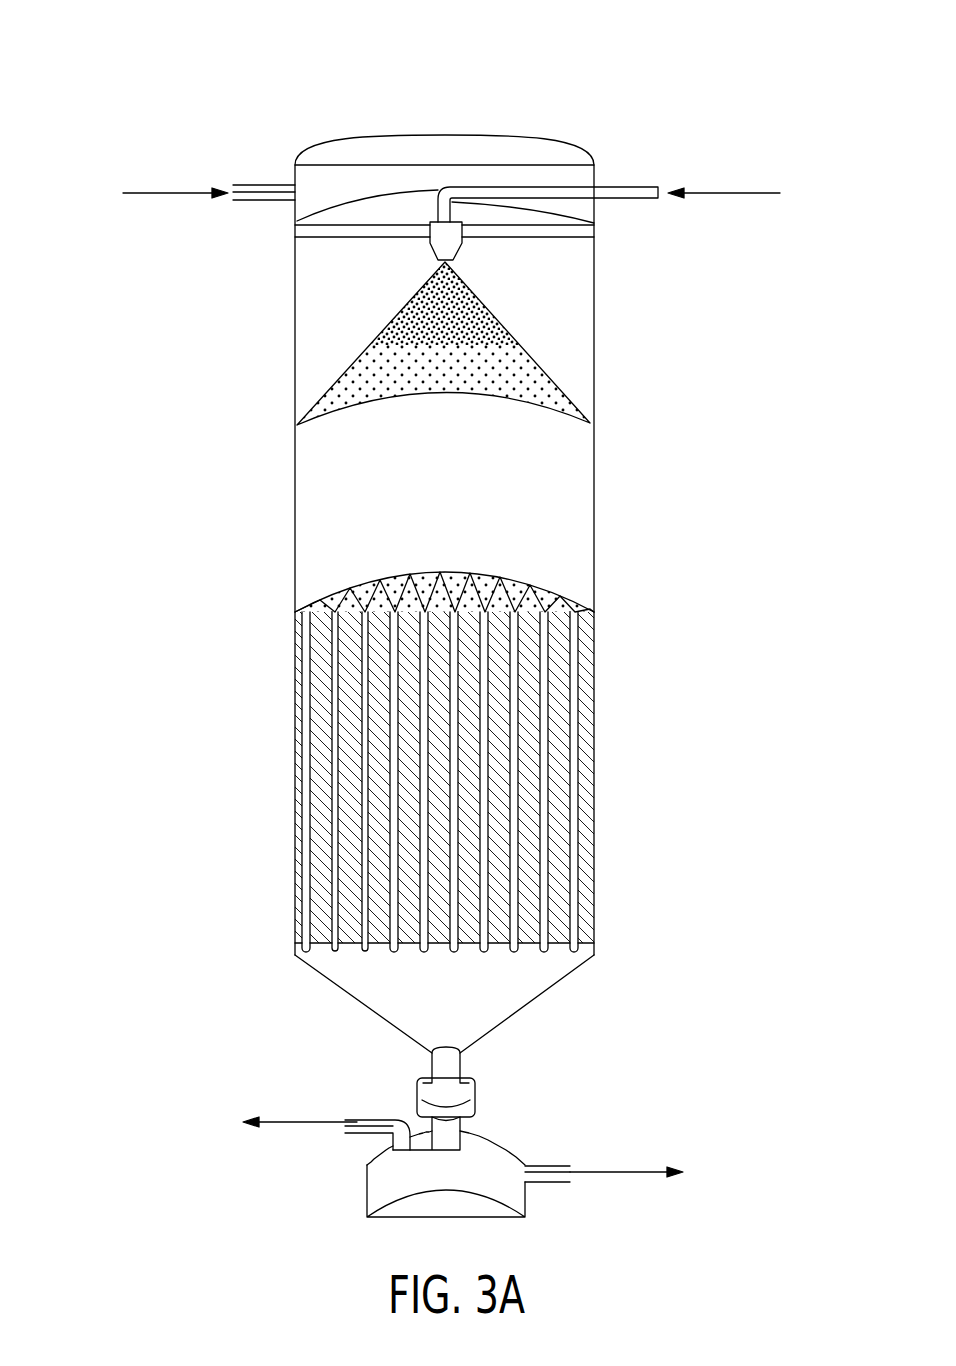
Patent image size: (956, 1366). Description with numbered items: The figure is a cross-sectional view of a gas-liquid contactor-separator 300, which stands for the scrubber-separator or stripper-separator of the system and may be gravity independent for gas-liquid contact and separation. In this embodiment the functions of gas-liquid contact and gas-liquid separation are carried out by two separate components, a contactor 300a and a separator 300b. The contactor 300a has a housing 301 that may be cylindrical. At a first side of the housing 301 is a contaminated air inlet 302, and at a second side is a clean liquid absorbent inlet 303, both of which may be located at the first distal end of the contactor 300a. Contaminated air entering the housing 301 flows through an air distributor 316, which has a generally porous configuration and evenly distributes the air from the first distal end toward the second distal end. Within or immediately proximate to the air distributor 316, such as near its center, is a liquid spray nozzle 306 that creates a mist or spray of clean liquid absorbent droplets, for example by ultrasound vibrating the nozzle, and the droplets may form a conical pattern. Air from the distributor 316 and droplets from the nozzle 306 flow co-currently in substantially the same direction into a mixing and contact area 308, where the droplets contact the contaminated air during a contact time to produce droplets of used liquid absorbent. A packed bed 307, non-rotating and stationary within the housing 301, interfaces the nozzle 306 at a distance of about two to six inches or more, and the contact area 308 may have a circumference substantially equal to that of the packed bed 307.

The contactor-separator 300 is at (170, 78).
The contactor 300a is at (260, 379).
The separator 300b is at (335, 1190).
The housing 301 is at (297, 472).
The contaminated air inlet 302 is at (263, 184).
The clean liquid absorbent inlet 303 is at (624, 186).
The liquid spray nozzle 306 is at (455, 255).
The packed bed 307 is at (350, 808).
The contact area 308 is at (508, 502).
The air distributor 316 is at (363, 218).